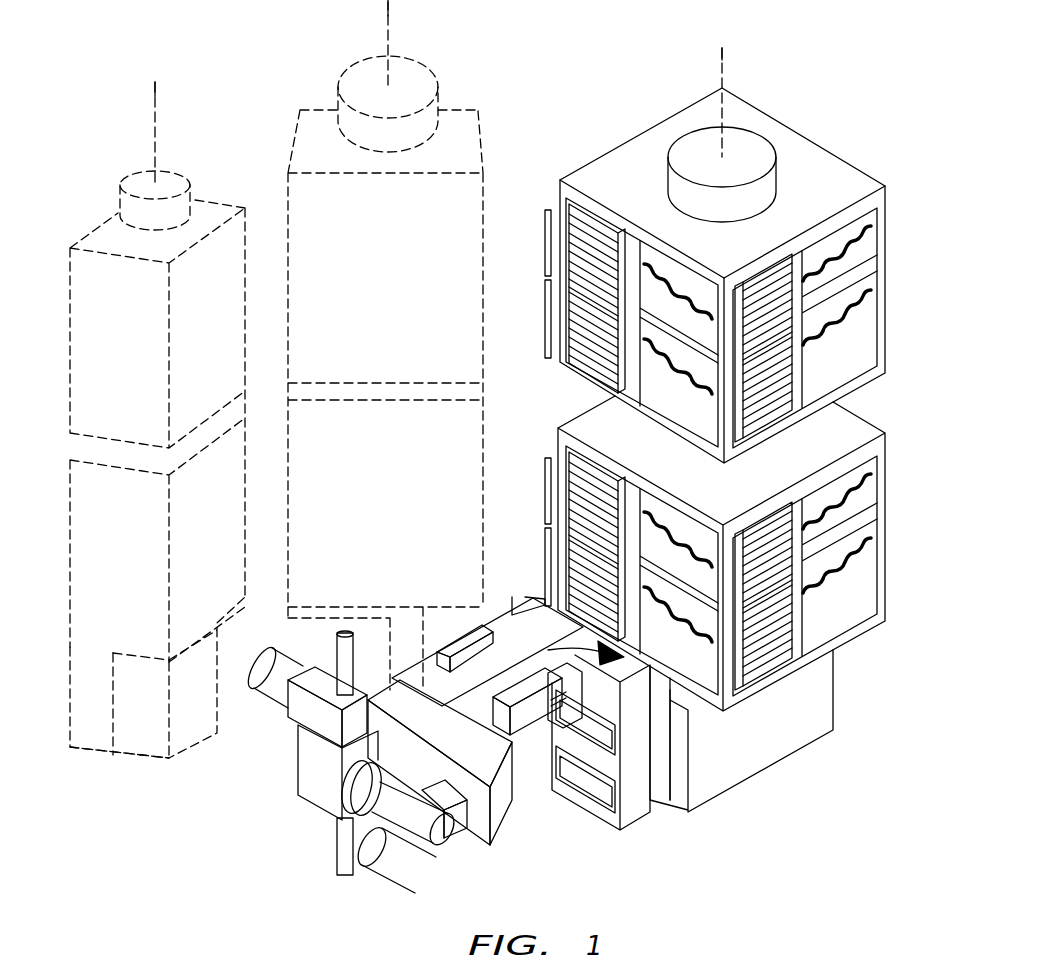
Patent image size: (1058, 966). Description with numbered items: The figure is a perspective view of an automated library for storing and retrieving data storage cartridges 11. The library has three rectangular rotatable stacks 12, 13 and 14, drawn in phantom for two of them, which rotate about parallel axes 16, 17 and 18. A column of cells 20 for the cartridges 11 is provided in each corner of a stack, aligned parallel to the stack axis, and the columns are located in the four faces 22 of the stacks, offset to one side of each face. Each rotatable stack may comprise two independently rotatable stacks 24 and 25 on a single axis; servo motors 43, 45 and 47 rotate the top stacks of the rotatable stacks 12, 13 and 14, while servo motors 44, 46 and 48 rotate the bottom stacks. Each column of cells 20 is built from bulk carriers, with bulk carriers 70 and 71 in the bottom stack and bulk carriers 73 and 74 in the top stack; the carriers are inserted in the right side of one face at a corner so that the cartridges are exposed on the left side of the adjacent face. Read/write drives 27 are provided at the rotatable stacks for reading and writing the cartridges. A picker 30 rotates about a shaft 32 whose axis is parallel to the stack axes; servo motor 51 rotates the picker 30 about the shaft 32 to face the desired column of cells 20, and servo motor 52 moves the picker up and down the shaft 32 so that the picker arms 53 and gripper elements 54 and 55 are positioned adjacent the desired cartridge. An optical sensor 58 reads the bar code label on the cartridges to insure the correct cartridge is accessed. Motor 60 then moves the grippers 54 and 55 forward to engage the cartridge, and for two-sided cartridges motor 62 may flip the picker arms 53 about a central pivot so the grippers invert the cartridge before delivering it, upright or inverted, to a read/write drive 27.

The data storage cartridges 11 is at (590, 222).
The rotatable stack 12 is at (872, 130).
The rotatable stack 13 is at (487, 56).
The rotatable stack 14 is at (238, 163).
The axis 16 is at (727, 52).
The axis 17 is at (385, 19).
The axis 18 is at (152, 98).
The column of cells 20 is at (528, 408).
The faces 22 is at (627, 225).
The independently rotatable stack 24 is at (887, 207).
The independently rotatable stack 25 is at (887, 483).
The read/write drive 27 is at (622, 760).
The picker 30 is at (278, 792).
The shaft 32 is at (336, 860).
The servo motor 43 is at (767, 141).
The servo motor 44 is at (833, 700).
The servo motor 45 is at (420, 59).
The servo motor 46 is at (440, 620).
The servo motor 47 is at (183, 172).
The servo motor 48 is at (100, 752).
The servo motor 51 is at (296, 645).
The servo motor 52 is at (448, 835).
The picker arms 53 is at (418, 683).
The gripper element 54 is at (514, 598).
The gripper element 55 is at (590, 690).
The optical sensor 58 is at (487, 622).
The motor 60 is at (512, 786).
The motor 62 is at (372, 862).
The bulk carrier 70 is at (688, 700).
The bulk carrier 71 is at (680, 570).
The bulk carrier 73 is at (693, 422).
The bulk carrier 74 is at (682, 318).